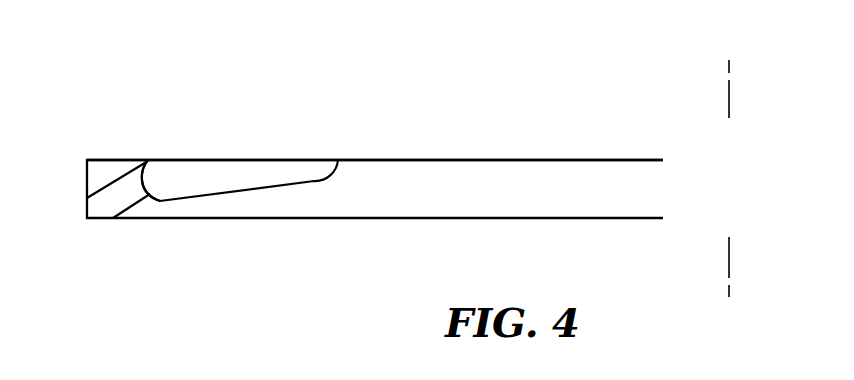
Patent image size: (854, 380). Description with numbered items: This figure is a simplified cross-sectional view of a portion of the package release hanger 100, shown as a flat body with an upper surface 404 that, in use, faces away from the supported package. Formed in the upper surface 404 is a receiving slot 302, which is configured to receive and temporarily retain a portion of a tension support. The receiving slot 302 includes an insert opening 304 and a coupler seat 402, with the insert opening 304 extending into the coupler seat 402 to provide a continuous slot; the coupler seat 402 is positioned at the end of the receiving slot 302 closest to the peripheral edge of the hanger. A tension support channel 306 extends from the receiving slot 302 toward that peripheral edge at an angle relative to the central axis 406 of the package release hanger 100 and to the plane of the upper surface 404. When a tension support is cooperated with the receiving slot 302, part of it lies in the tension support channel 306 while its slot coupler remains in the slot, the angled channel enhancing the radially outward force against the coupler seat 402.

The package release hanger 100 is at (603, 170).
The receiving slot 302 is at (272, 86).
The insert opening 304 is at (300, 170).
The tension support channel 306 is at (111, 199).
The coupler seat 402 is at (163, 174).
The upper surface 404 is at (550, 160).
The central axis 406 is at (729, 90).